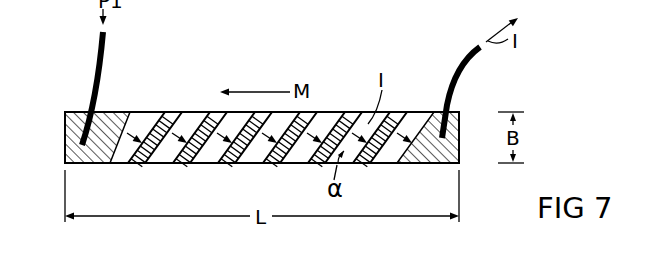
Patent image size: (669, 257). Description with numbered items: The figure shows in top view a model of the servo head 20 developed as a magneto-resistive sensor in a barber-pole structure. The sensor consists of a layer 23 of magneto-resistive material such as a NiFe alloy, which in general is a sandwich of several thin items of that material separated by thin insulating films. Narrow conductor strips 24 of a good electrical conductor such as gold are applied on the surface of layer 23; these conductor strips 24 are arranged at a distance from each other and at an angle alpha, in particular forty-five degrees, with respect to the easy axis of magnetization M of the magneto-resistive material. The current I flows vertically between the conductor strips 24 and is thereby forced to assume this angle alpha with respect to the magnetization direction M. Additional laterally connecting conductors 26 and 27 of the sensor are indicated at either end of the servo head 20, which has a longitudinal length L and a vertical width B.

The servo head 20 is at (65, 143).
The layer of magneto-resistive material 23 is at (204, 152).
The conductor strips 24 is at (267, 164).
The laterally connecting conductor 26 is at (108, 60).
The laterally connecting conductor 27 is at (458, 65).